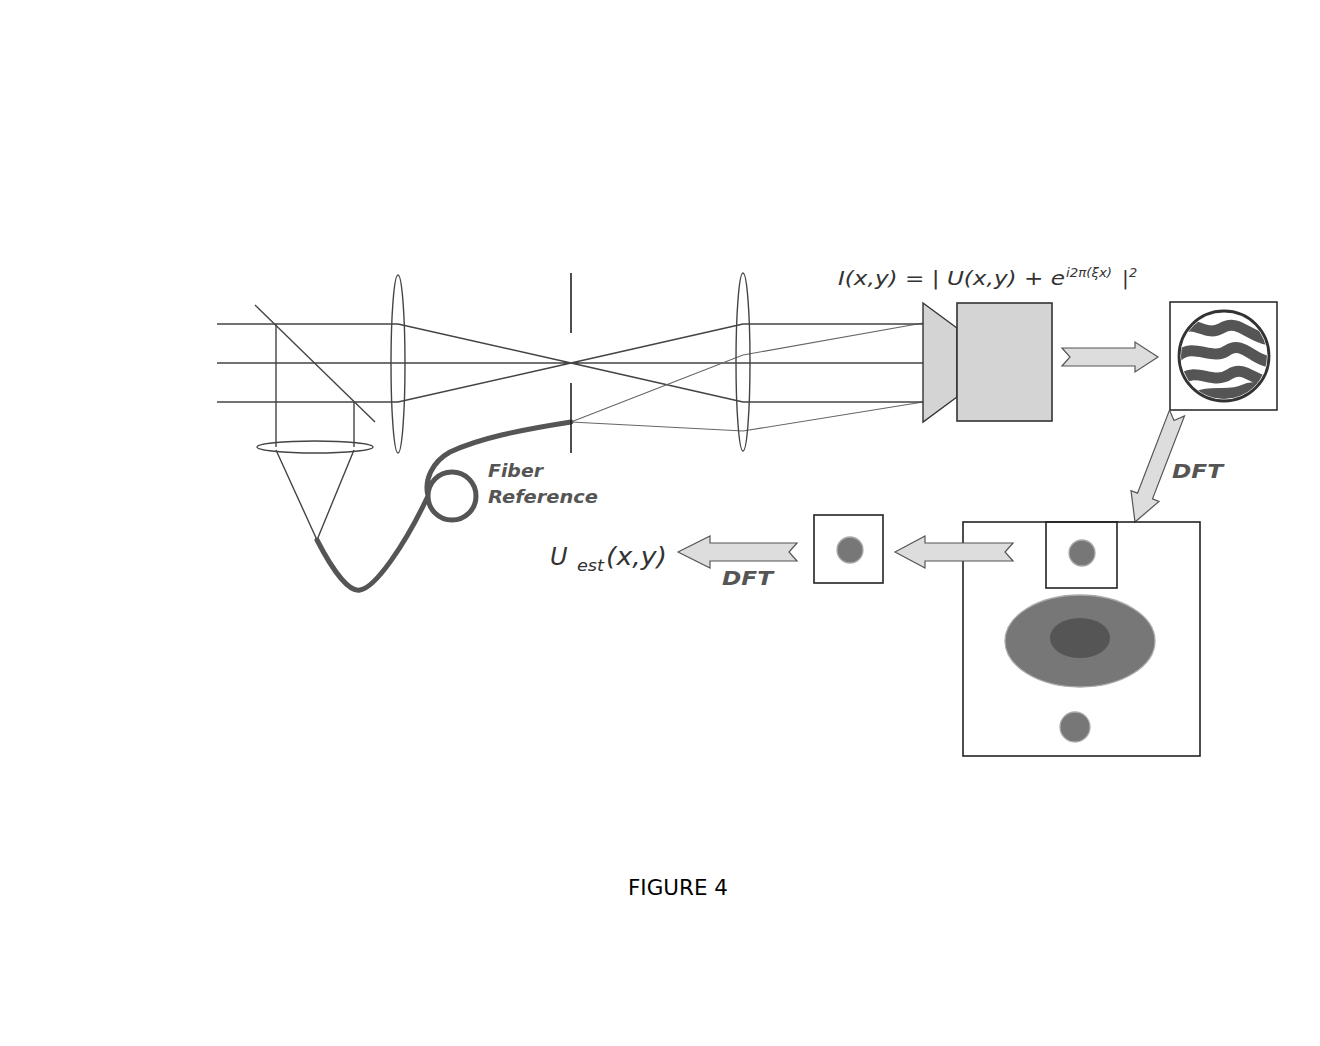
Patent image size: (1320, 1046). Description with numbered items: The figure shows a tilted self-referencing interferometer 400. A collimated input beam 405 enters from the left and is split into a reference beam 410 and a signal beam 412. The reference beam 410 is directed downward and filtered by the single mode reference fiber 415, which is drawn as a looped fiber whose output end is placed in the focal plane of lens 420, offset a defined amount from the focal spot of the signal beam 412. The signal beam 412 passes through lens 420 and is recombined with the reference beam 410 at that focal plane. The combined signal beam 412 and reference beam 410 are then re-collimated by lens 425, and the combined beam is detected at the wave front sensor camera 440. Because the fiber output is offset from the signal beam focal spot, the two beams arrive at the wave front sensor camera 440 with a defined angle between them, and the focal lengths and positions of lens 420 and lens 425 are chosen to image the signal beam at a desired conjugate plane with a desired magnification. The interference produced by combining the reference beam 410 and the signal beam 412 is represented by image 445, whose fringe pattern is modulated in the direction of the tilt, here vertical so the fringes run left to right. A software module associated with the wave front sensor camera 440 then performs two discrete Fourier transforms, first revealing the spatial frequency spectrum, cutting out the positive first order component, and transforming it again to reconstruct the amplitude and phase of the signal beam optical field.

The tilted self-referencing interferometer 400 is at (287, 128).
The input beam 405 is at (269, 360).
The reference beam 410 is at (283, 444).
The signal beam 412 is at (315, 361).
The single mode reference fiber 415 is at (589, 378).
The lens 420 is at (401, 344).
The lens 425 is at (741, 348).
The wave front sensor camera 440 is at (987, 362).
The image 445 is at (1223, 341).